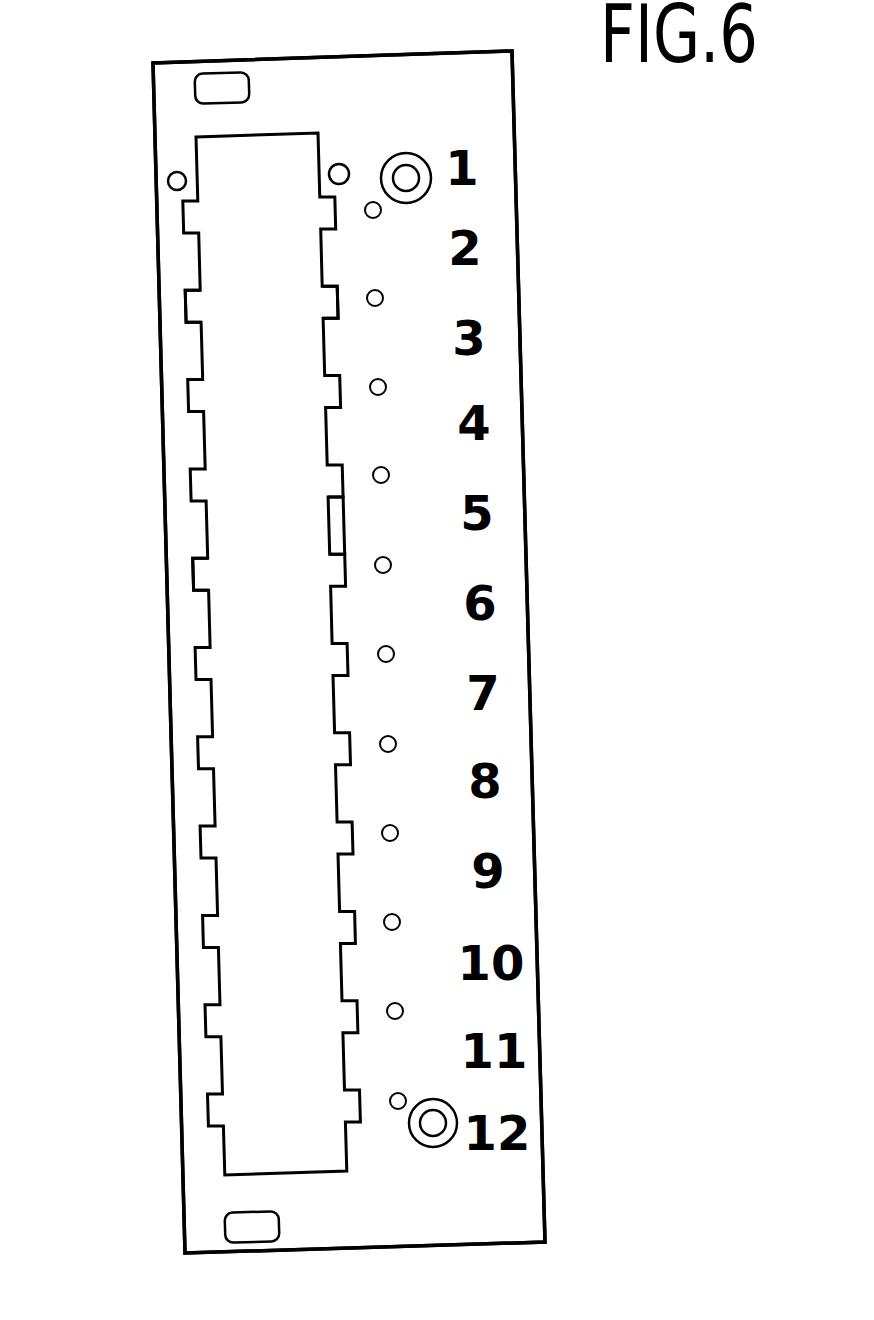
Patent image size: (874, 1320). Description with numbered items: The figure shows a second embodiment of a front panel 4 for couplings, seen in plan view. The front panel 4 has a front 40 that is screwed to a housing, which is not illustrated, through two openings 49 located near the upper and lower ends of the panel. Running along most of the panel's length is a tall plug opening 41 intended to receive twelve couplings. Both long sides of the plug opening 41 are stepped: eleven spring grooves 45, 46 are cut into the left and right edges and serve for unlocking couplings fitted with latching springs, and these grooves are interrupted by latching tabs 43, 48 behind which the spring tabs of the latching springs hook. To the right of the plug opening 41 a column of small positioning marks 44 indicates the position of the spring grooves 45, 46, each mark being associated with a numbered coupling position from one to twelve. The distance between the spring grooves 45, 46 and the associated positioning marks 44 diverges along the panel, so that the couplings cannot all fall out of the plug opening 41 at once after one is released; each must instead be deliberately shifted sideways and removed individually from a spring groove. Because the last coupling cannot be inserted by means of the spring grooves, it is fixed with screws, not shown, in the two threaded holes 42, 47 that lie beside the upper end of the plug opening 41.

The front panel 4 is at (144, 670).
The front 40 is at (516, 468).
The plug opening 41 is at (255, 265).
The threaded hole 42 is at (172, 178).
The latching tab 43 is at (205, 530).
The positioning mark 44 is at (386, 387).
The spring groove 45 is at (186, 305).
The spring groove 46 is at (327, 297).
The threaded hole 47 is at (339, 165).
The latching tab 48 is at (336, 528).
The opening 49 is at (410, 175).